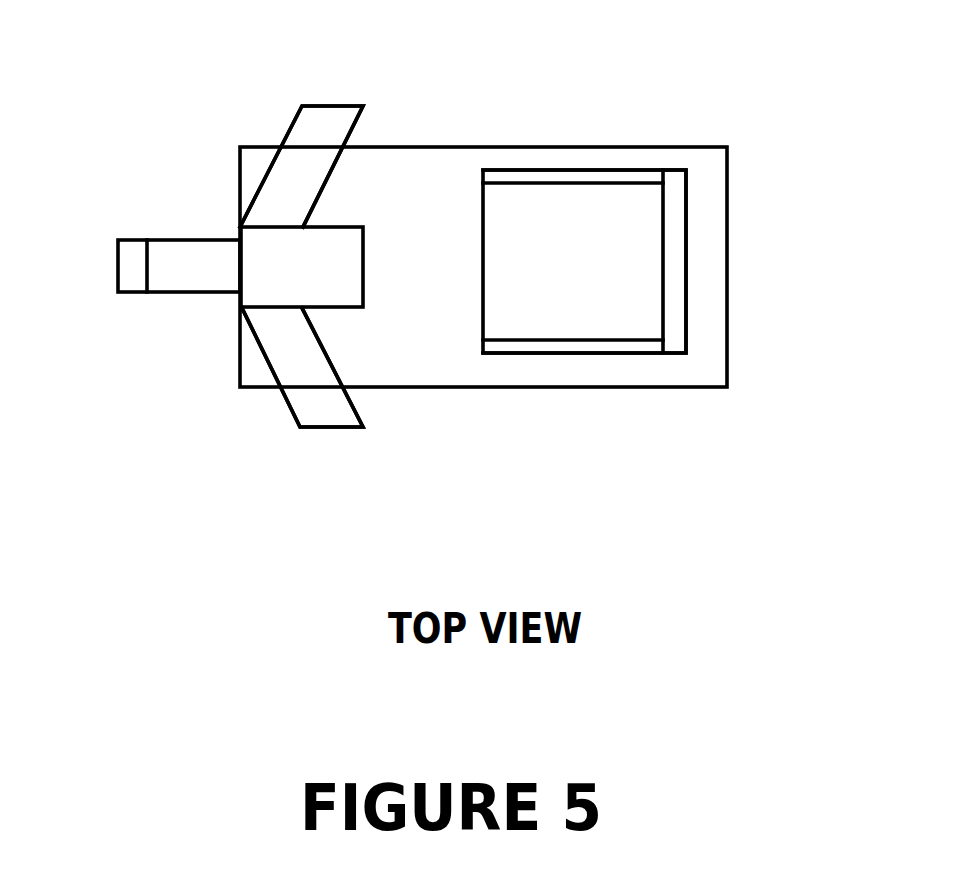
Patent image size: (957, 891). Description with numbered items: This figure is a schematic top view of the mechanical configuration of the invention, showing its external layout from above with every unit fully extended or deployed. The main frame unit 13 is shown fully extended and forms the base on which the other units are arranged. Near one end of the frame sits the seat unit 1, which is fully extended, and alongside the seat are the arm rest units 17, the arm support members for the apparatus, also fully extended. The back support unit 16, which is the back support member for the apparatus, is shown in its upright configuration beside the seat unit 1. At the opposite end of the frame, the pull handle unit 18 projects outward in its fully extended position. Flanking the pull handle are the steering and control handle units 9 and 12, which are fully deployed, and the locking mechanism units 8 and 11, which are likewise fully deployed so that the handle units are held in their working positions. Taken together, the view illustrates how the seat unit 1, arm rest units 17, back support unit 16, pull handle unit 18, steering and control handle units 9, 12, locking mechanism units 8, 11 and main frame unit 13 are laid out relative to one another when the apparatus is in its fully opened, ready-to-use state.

The seat unit 1 is at (584, 261).
The locking mechanism unit 8 is at (303, 366).
The steering and control handle unit 9 is at (323, 405).
The locking mechanism unit 11 is at (285, 207).
The steering and control handle unit 12 is at (323, 128).
The main frame unit 13 is at (403, 260).
The back support unit 16 is at (687, 232).
The arm rest unit 17 is at (505, 170).
The pull handle unit 18 is at (179, 266).